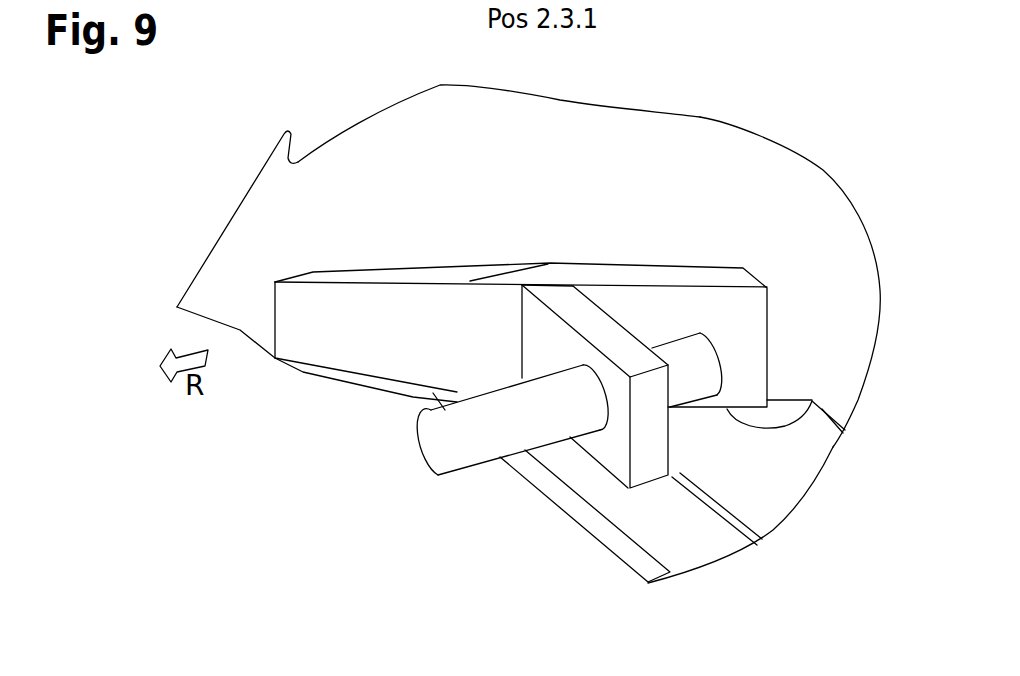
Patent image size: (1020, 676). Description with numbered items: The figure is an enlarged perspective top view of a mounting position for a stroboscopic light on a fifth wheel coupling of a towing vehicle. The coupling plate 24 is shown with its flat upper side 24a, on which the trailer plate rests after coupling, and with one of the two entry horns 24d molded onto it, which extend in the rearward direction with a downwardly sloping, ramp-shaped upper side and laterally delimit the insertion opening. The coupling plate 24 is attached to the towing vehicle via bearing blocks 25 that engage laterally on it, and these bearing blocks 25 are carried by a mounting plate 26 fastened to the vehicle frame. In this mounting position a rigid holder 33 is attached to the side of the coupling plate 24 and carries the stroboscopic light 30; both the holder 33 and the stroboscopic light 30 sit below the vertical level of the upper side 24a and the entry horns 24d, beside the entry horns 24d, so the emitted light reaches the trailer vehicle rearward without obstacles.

The coupling plate 24 is at (815, 193).
The upper side 24a is at (705, 140).
The entry horns 24d is at (253, 230).
The rigid holder 33 is at (370, 343).
The stroboscopic light 30 is at (473, 468).
The mounting plate 26 is at (642, 527).
The bearing blocks 25 is at (783, 502).